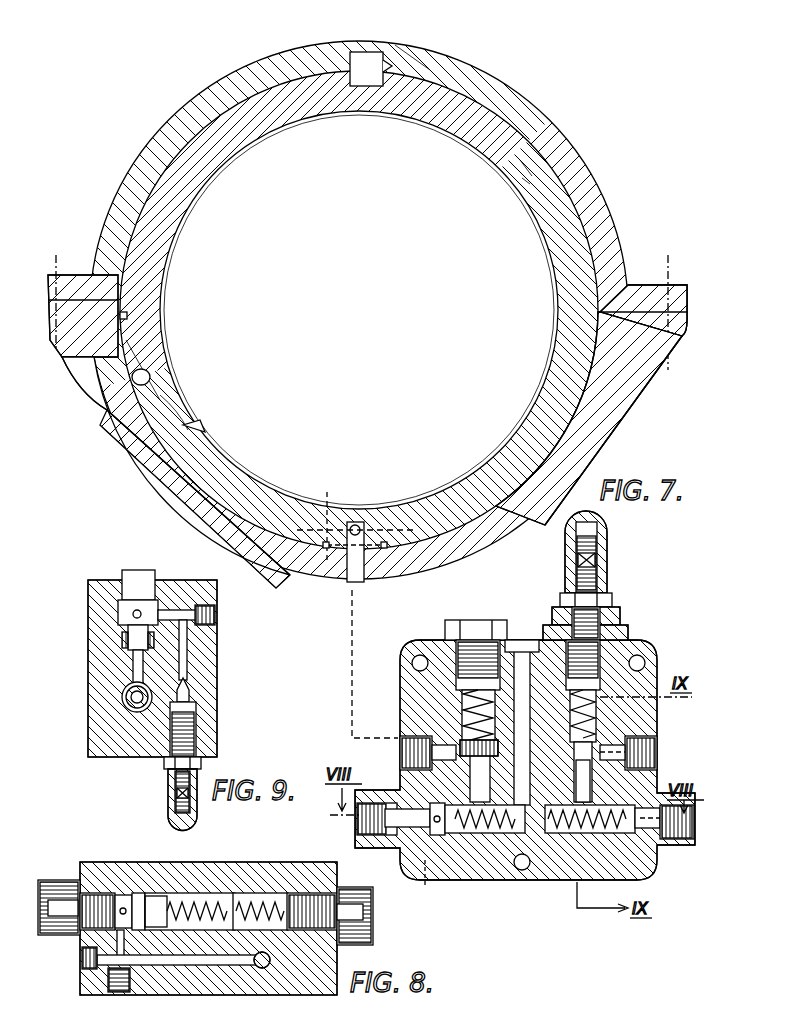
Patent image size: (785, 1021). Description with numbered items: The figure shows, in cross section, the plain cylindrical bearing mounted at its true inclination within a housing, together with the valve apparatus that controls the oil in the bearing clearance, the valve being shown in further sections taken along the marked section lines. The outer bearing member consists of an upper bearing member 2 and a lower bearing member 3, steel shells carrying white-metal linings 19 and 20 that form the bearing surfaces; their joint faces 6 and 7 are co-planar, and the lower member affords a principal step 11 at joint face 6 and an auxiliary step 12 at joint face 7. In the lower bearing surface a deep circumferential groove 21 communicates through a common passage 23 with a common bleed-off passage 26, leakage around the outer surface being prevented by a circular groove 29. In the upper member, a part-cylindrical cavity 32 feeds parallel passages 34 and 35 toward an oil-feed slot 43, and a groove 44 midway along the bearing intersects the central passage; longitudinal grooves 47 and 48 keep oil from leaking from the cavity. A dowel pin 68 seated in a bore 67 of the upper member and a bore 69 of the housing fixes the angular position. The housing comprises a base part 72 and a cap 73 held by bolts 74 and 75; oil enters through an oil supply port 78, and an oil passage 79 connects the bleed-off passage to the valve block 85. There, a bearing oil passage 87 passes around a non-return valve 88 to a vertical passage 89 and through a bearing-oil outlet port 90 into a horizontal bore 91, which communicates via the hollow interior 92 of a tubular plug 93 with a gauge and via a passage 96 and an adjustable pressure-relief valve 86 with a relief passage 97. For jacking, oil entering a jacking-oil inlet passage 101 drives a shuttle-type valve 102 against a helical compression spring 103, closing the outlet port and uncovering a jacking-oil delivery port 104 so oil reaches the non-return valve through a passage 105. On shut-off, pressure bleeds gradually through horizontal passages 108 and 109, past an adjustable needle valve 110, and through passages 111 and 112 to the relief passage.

In FIG. 7, the upper bearing member 2 is at (217, 130).
In FIG. 7, the lower bearing member 3 is at (588, 428).
In FIG. 7, the joint face 6 is at (163, 468).
In FIG. 7, the joint face 7 is at (527, 168).
In FIG. 7, the principal step 11 is at (203, 430).
In FIG. 7, the auxiliary step 12 is at (525, 185).
In FIG. 7, the lining 19 is at (263, 133).
In FIG. 7, the lining 20 is at (558, 300).
In FIG. 7, the circumferential groove 21 is at (325, 516).
In FIG. 7, the common passage 23 is at (356, 524).
In FIG. 7, the common bleed-off passage 26 is at (365, 529).
In FIG. 7, the circular groove 29 is at (325, 550).
In FIG. 7, the part-cylindrical cavity 32 is at (130, 353).
In FIG. 7, the central passage 34 is at (163, 410).
In FIG. 7, the passage 35 is at (146, 377).
In FIG. 7, the oil-feed slot 43 is at (213, 429).
In FIG. 7, the groove 44 is at (182, 407).
In FIG. 7, the longitudinal groove 47 is at (127, 317).
In FIG. 7, the longitudinal groove 48 is at (132, 405).
In FIG. 7, the radially inward extending bore 67 is at (432, 64).
In FIG. 7, the dowel pin 68 is at (366, 60).
In FIG. 7, the bore 69 is at (393, 62).
In FIG. 7, the base part 72 is at (625, 393).
In FIG. 7, the cap 73 is at (287, 56).
In FIG. 7, the bolt 74 is at (60, 268).
In FIG. 7, the bolt 75 is at (668, 266).
In FIG. 7, the oil supply port 78 is at (97, 395).
In FIG. 7, the oil passage 79 is at (356, 568).
In FIG. 7, the metal block 85 is at (652, 657).
In FIG. 7, the adjustable pressure-relief valve 86 is at (600, 715).
In FIG. 9, the adjustable pressure-relief valve 86 is at (132, 578).
In FIG. 7, the bearing oil passage 87 is at (430, 725).
In FIG. 7, the non-return valve 88 is at (460, 705).
In FIG. 7, the vertical passage 89 is at (522, 790).
In FIG. 7, the bearing-oil outlet port 90 is at (528, 842).
In FIG. 7, the horizontally extending bore 91 is at (540, 836).
In FIG. 7, the hollow interior 92 is at (650, 842).
In FIG. 7, the tubular plug 93 is at (655, 847).
In FIG. 9, the tubular plug 93 is at (122, 700).
In FIG. 8, the tubular plug 93 is at (263, 902).
In FIG. 7, the passage 96 is at (583, 793).
In FIG. 9, the passage 96 is at (137, 662).
In FIG. 7, the relief passage 97 is at (615, 742).
In FIG. 7, the jacking-oil inlet passage 101 is at (405, 820).
In FIG. 8, the jacking-oil inlet passage 101 is at (70, 900).
In FIG. 7, the shuttle-type valve 102 is at (452, 836).
In FIG. 8, the shuttle-type valve 102 is at (170, 897).
In FIG. 7, the helical compression spring 103 is at (572, 830).
In FIG. 7, the jacking-oil delivery port 104 is at (477, 780).
In FIG. 7, the passage 105 is at (463, 788).
In FIG. 7, the horizontal passage 108 is at (432, 845).
In FIG. 8, the horizontal passage 108 is at (120, 938).
In FIG. 9, the horizontal passage 109 is at (192, 692).
In FIG. 8, the horizontal passage 109 is at (137, 958).
In FIG. 9, the adjustable needle valve 110 is at (185, 718).
In FIG. 8, the adjustable needle valve 110 is at (273, 963).
In FIG. 9, the passage 111 is at (186, 660).
In FIG. 7, the passage 112 is at (656, 748).
In FIG. 9, the passage 112 is at (170, 615).